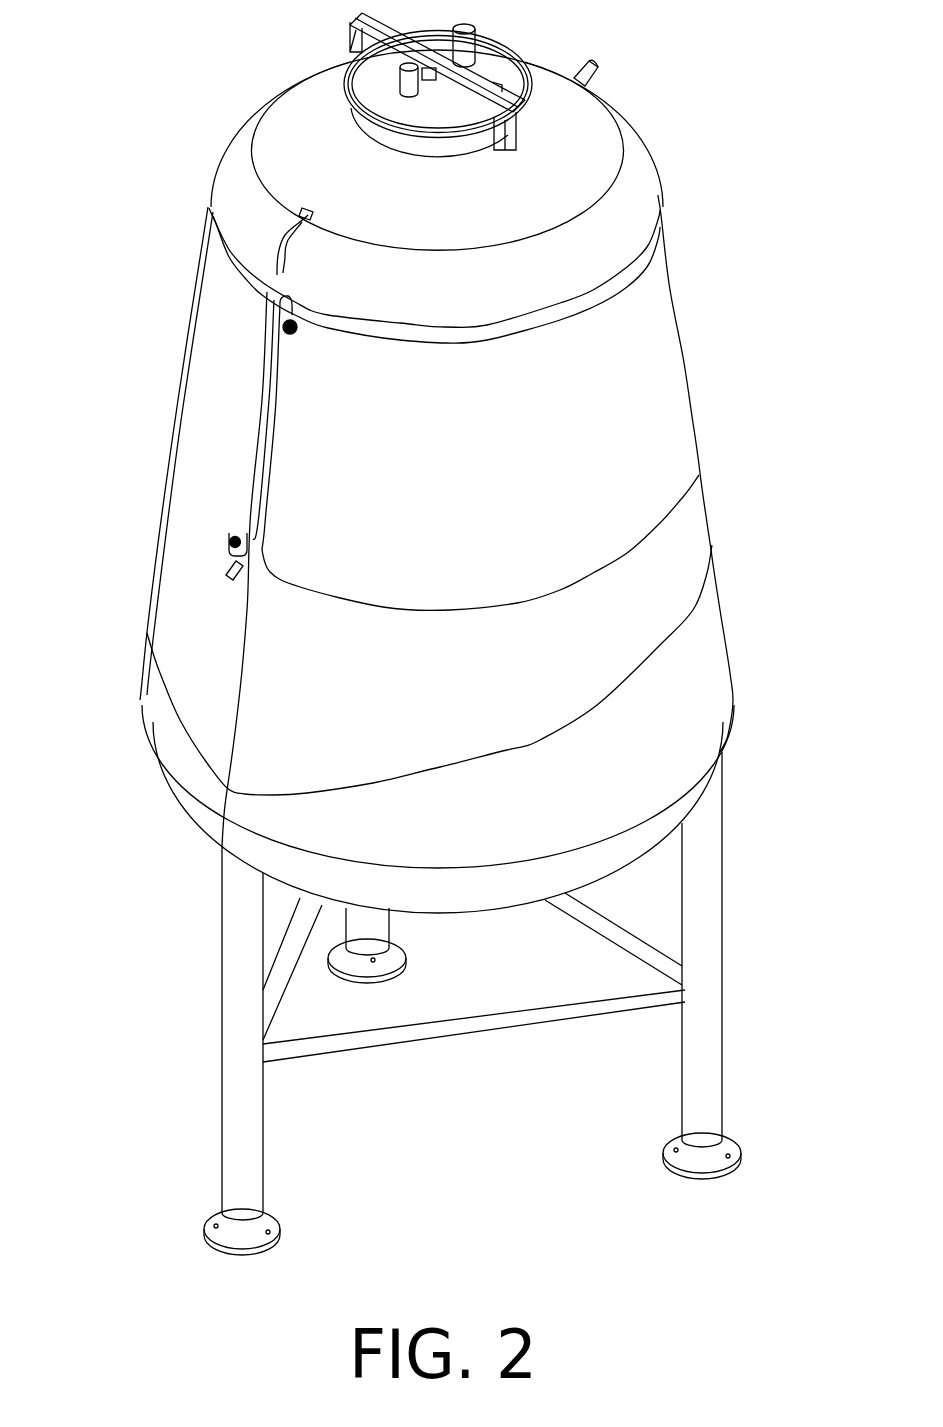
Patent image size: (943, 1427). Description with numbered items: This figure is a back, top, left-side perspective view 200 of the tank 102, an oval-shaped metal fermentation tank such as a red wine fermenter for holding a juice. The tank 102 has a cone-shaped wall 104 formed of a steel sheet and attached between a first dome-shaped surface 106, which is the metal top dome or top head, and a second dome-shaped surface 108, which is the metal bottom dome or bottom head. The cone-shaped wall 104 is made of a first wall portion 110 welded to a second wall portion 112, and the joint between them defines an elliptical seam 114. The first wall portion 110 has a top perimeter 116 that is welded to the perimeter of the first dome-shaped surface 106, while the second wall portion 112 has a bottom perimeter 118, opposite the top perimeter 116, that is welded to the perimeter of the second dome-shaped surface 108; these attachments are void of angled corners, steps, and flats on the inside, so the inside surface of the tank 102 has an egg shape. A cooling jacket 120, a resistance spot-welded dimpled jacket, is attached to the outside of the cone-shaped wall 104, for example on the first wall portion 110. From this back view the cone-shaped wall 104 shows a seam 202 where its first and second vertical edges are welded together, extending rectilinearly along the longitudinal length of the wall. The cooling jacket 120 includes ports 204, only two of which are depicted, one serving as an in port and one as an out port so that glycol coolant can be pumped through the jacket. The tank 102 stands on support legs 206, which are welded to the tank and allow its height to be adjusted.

The tank 102 is at (115, 19).
The cone-shaped wall 104 is at (208, 206).
The first dome-shaped surface 106 is at (665, 116).
The second dome-shaped surface 108 is at (742, 765).
The first wall portion 110 is at (665, 205).
The second wall portion 112 is at (712, 533).
The seam 114 is at (508, 752).
The top perimeter 116 is at (487, 325).
The bottom perimeter 118 is at (488, 866).
The cooling jacket 120 is at (460, 456).
The back, top, left-side perspective view 200 is at (758, 1258).
The seam 202 is at (247, 609).
The ports 204 is at (292, 336).
The support legs 206 is at (222, 971).